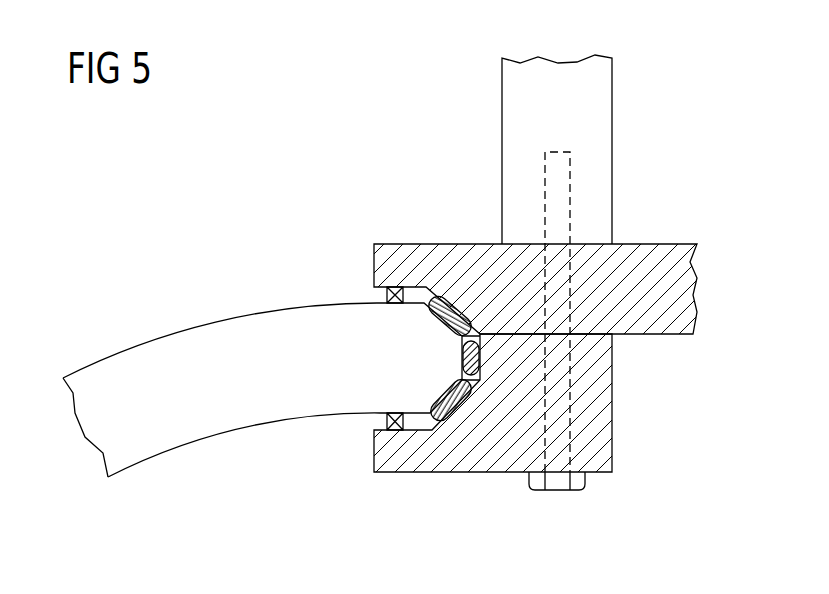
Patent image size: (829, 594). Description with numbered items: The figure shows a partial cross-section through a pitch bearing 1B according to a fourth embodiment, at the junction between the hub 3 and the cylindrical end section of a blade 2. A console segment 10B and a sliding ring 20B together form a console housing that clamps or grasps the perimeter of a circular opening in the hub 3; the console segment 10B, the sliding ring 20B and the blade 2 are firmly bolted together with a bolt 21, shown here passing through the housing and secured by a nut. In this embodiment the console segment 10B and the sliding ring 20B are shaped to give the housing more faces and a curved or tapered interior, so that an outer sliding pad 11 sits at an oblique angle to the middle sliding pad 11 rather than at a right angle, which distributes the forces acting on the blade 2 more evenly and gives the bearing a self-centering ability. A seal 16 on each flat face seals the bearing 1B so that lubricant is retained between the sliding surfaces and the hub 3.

The pitch bearing 1B is at (652, 113).
The blade 2 is at (512, 103).
The hub 3 is at (175, 348).
The console segment 10B is at (605, 436).
The sliding ring 20B is at (641, 244).
The sliding pad 11 is at (457, 300).
The seal 16 is at (387, 296).
The bolt 21 is at (557, 482).